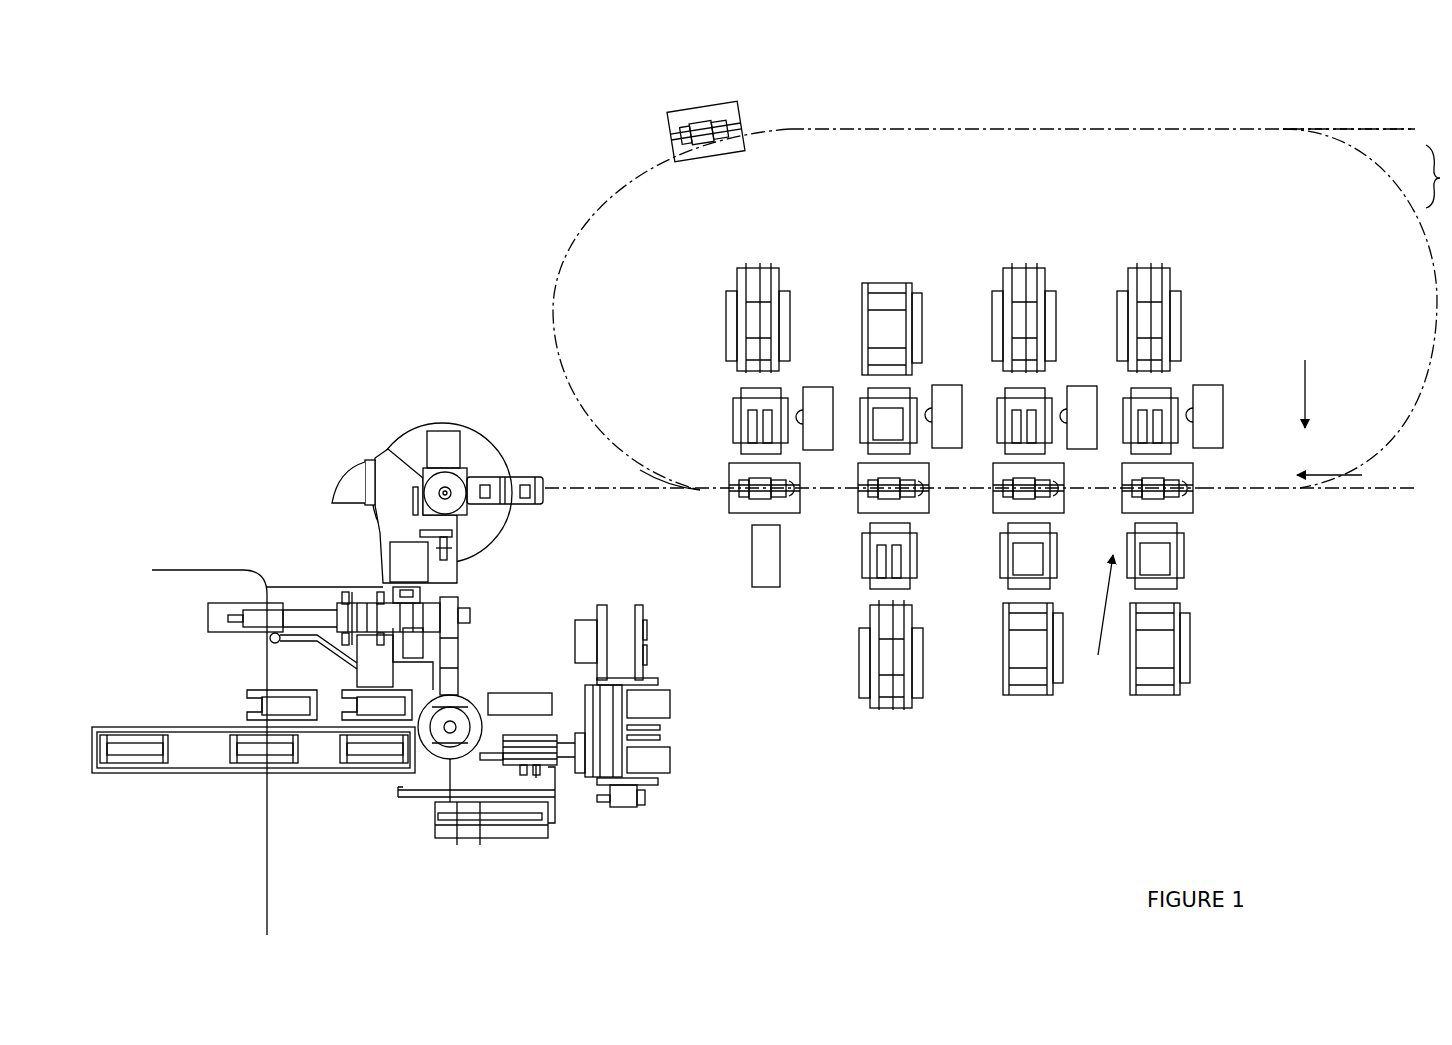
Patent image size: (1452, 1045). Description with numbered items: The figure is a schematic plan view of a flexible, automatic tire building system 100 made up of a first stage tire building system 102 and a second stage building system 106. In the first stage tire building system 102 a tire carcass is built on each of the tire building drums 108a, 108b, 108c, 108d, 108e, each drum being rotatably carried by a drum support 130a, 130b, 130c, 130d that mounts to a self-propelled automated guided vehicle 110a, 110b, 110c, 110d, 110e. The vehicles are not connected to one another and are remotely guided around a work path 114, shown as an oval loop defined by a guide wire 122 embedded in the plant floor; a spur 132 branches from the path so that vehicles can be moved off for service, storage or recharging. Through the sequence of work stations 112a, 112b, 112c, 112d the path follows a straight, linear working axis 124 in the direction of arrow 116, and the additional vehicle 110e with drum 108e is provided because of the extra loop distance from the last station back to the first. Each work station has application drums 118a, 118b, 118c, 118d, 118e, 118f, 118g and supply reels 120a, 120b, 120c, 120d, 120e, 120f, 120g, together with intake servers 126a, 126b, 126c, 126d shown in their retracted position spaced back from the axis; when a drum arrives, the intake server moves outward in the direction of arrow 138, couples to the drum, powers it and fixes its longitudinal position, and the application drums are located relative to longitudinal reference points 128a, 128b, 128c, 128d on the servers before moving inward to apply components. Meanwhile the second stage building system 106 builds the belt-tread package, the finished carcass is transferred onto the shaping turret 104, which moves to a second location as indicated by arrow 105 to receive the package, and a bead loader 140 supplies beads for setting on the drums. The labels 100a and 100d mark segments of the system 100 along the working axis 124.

The automatic tire building system 100 is at (1154, 113).
The first stage tire building system 102 is at (1240, 112).
The shaping turret 104 is at (395, 428).
The arrow 105 is at (540, 510).
The second stage building system 106 is at (175, 550).
The tire building drum 108a is at (1180, 500).
The tire building drum 108b is at (1045, 497).
The tire building drum 108c is at (860, 485).
The tire building drum 108d is at (750, 497).
The tire building drum 108e is at (722, 124).
The automated guided vehicle 110a is at (1190, 500).
The automated guided vehicle 110b is at (1056, 515).
The automated guided vehicle 110c is at (918, 515).
The automated guided vehicle 110d is at (800, 508).
The automated guided vehicle 110e is at (719, 113).
The work station 112a is at (1190, 282).
The work station 112b is at (1118, 192).
The work station 112c is at (900, 240).
The work station 112d is at (762, 240).
The work path 114 is at (1418, 176).
The arrow 116 is at (1318, 473).
The application drum 118a is at (1172, 400).
The application drum 118b is at (1178, 565).
The application drum 118c is at (1013, 422).
The application drum 118d is at (1028, 422).
The application drum 118e is at (1010, 575).
The application drum 118f is at (918, 590).
The application drum 118g is at (733, 412).
The supply reel 120a is at (1150, 265).
The supply reel 120b is at (1178, 698).
The supply reel 120c is at (1030, 268).
The supply reel 120d is at (1050, 698).
The supply reel 120e is at (868, 283).
The supply reel 120f is at (873, 705).
The supply reel 120g is at (740, 268).
The guide wire 122 is at (1423, 235).
The working axis 124 is at (682, 494).
The intake server 126a is at (1210, 385).
The intake server 126b is at (1085, 386).
The intake server 126c is at (946, 385).
The intake server 126d is at (815, 387).
The longitudinal reference point 128a is at (1187, 416).
The longitudinal reference point 128b is at (1061, 416).
The longitudinal reference point 128c is at (926, 415).
The longitudinal reference point 128d is at (797, 418).
The drum support 130a is at (1183, 484).
The drum support 130b is at (1052, 484).
The drum support 130c is at (918, 484).
The drum support 130d is at (788, 484).
The spur 132 is at (1336, 128).
The arrow 138 is at (1305, 383).
The bead loader 140 is at (1107, 631).
The track segment 100a is at (1230, 488).
The track segment 100d is at (728, 477).